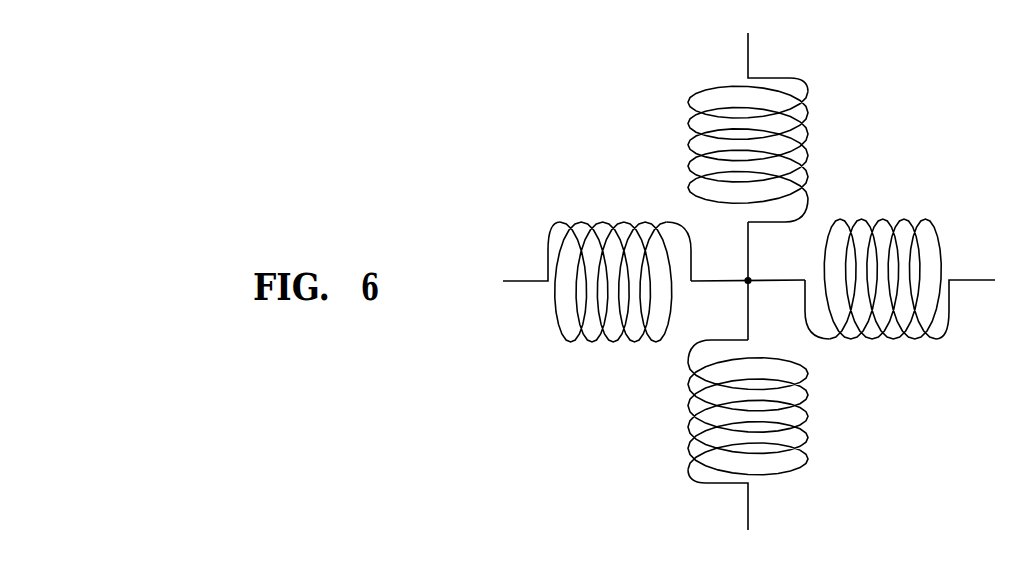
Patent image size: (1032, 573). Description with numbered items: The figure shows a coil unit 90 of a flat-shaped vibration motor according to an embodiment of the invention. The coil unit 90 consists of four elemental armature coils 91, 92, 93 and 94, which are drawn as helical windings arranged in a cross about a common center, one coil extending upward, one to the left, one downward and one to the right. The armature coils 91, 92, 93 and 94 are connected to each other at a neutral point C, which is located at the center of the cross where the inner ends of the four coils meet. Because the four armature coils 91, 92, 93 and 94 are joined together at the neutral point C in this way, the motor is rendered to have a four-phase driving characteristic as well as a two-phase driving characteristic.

The coil unit 90 is at (737, 276).
The armature coil 91 is at (807, 115).
The armature coil 92 is at (587, 343).
The armature coil 93 is at (808, 422).
The armature coil 94 is at (940, 222).
The neutral point C is at (750, 280).